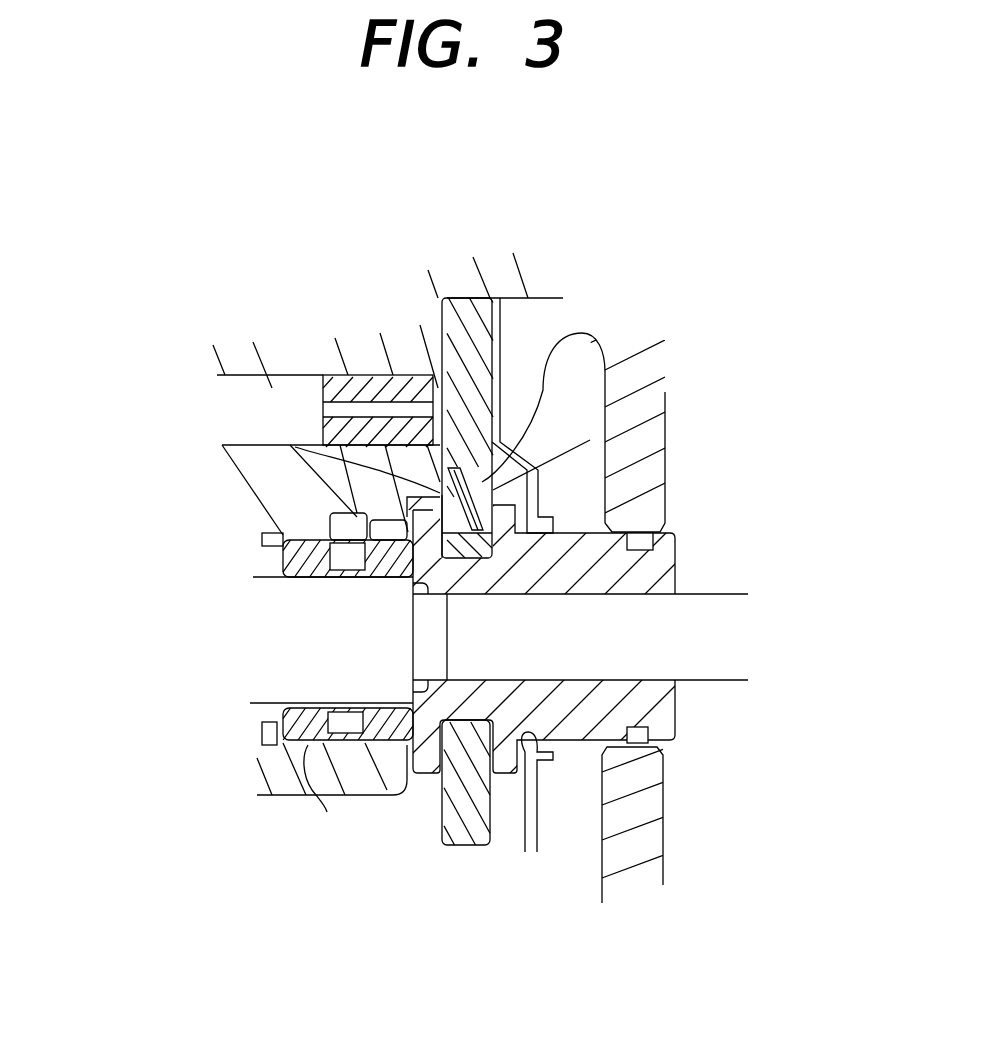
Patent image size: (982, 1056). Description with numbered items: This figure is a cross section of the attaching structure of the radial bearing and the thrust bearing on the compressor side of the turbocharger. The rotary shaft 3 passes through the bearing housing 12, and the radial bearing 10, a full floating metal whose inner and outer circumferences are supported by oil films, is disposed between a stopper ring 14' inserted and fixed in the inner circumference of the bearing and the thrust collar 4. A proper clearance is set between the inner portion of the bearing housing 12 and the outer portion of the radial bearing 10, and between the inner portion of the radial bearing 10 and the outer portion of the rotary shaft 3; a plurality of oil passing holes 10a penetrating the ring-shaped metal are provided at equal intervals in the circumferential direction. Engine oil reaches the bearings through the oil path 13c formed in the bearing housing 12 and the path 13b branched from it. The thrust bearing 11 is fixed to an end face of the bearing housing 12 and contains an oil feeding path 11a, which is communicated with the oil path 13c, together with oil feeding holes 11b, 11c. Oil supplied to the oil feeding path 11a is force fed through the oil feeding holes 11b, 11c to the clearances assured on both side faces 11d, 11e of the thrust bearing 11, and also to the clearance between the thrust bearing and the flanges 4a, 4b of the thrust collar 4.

The rotary shaft 3 is at (683, 645).
The thrust collar 4 is at (680, 575).
The flange of the thrust collar 4a is at (495, 522).
The flange of the thrust collar 4b is at (445, 513).
The radial bearing 10 is at (327, 812).
The oil passing hole 10a is at (343, 567).
The thrust bearing 11 is at (482, 300).
The oil feeding path 11a is at (458, 418).
The oil feeding hole 11b is at (627, 293).
The oil feeding hole 11c is at (455, 522).
The side face of the thrust bearing 11d is at (607, 408).
The side face of the thrust bearing 11e is at (440, 493).
The bearing housing 12 is at (340, 512).
The path 13b is at (262, 460).
The oil path 13c is at (310, 392).
The stopper ring 14' is at (193, 724).